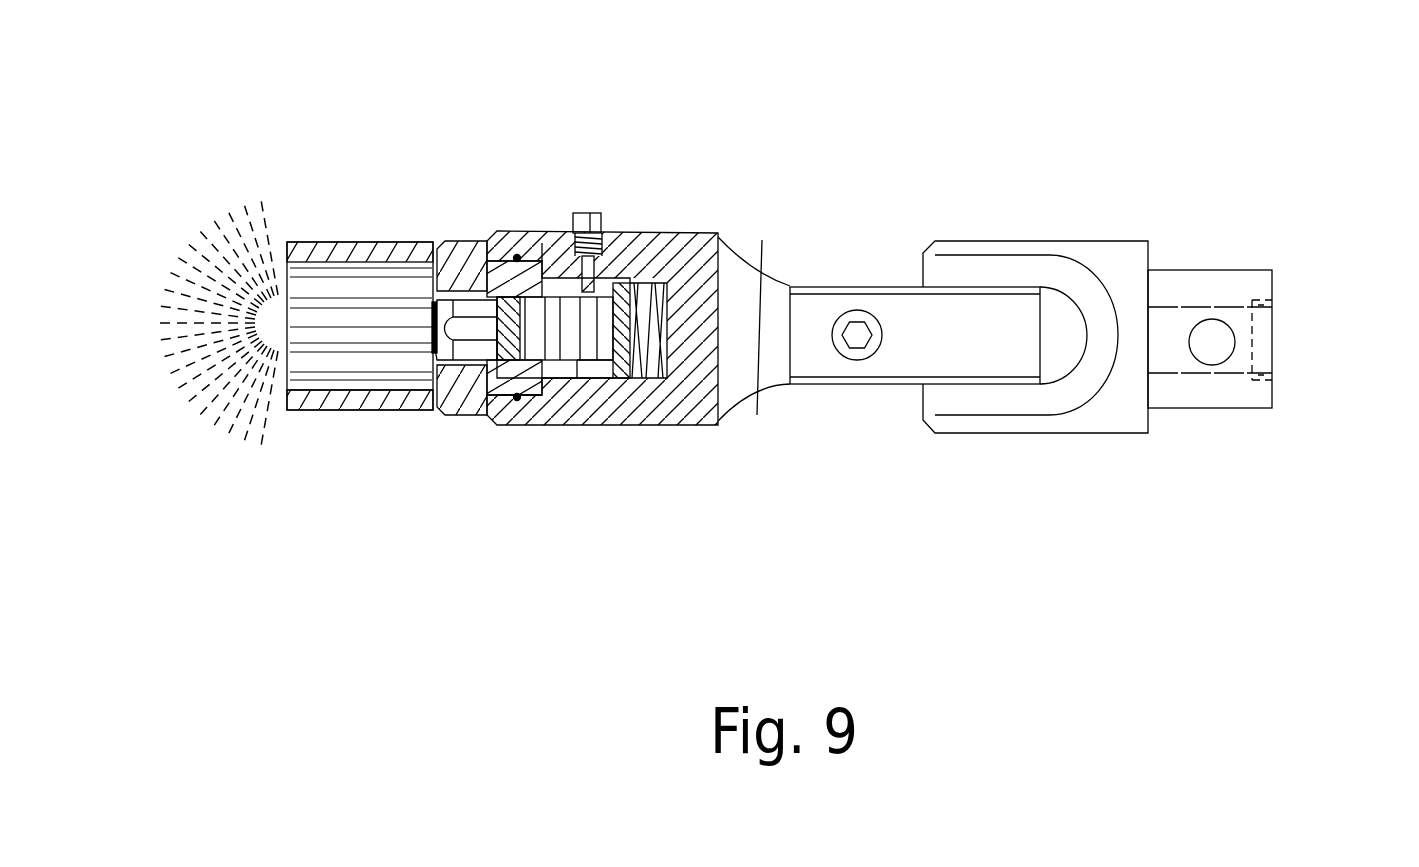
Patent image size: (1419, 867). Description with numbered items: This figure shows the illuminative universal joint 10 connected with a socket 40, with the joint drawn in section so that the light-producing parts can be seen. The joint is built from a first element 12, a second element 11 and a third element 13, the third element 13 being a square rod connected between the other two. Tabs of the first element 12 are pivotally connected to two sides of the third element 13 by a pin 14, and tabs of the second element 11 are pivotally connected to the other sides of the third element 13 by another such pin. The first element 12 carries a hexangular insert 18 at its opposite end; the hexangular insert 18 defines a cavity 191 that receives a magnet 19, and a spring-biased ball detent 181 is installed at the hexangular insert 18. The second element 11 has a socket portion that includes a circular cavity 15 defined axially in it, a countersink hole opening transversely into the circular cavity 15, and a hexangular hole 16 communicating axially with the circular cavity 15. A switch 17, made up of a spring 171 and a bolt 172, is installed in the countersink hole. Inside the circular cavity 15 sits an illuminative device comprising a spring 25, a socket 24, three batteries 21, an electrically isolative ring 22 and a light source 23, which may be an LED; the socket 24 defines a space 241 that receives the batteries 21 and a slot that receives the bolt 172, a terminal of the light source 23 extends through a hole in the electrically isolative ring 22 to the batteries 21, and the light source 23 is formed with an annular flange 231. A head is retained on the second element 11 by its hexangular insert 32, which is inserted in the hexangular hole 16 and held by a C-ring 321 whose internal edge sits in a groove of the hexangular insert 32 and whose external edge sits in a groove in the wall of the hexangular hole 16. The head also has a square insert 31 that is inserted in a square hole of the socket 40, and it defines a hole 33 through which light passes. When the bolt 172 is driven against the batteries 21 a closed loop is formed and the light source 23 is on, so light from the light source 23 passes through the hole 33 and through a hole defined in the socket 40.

The illuminative universal joint 10 is at (1035, 264).
The second element 11 is at (692, 403).
The first element 12 is at (1118, 267).
The third element 13 is at (965, 325).
The pin 14 is at (857, 333).
The circular cavity 15 is at (680, 277).
The hexangular hole 16 is at (540, 244).
The switch 17 is at (622, 161).
The spring 171 is at (607, 237).
The bolt 172 is at (590, 212).
The hexangular insert 18 is at (1250, 290).
The spring-biased ball detent 181 is at (1203, 337).
The magnet 19 is at (1278, 317).
The cavity 191 is at (1278, 363).
The batteries 21 is at (532, 395).
The electrically isolative ring 22 is at (465, 352).
The light source 23 is at (455, 325).
The annular flange 231 is at (470, 300).
The socket 24 is at (605, 365).
The space 241 is at (600, 372).
The spring 25 is at (640, 368).
The square insert 31 is at (432, 292).
The hexangular insert 32 is at (489, 244).
The C-ring 321 is at (514, 256).
The hole 33 is at (330, 372).
The socket 40 is at (305, 252).